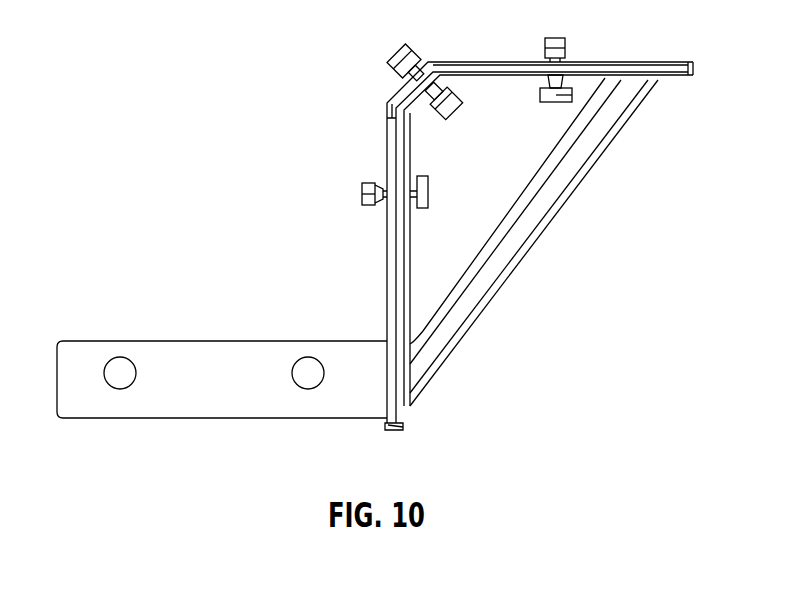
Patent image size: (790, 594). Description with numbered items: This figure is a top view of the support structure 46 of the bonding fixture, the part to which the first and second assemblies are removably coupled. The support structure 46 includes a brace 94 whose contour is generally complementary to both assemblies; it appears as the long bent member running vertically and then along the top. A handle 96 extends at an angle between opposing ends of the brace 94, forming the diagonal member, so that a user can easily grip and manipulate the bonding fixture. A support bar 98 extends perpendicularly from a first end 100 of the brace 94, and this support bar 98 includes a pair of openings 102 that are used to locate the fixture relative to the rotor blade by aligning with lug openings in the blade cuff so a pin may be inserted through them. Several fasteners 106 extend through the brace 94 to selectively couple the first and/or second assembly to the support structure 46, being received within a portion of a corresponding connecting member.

The support structure 46 is at (166, 45).
The brace 94 is at (388, 153).
The handle 96 is at (538, 200).
The support bar 98 is at (232, 400).
The first end 100 is at (403, 427).
The openings 102 is at (120, 364).
The fasteners 106 is at (450, 103).